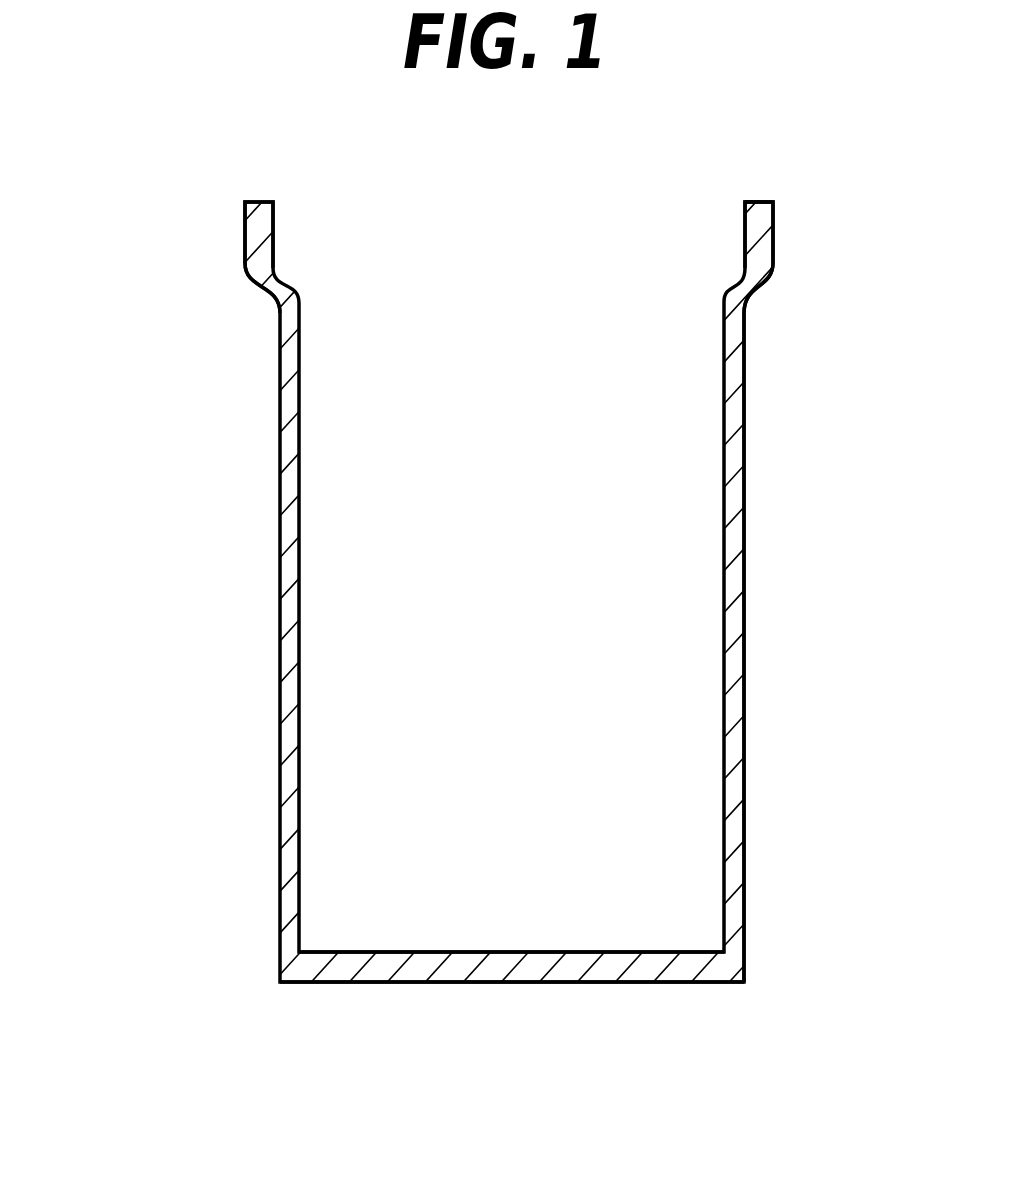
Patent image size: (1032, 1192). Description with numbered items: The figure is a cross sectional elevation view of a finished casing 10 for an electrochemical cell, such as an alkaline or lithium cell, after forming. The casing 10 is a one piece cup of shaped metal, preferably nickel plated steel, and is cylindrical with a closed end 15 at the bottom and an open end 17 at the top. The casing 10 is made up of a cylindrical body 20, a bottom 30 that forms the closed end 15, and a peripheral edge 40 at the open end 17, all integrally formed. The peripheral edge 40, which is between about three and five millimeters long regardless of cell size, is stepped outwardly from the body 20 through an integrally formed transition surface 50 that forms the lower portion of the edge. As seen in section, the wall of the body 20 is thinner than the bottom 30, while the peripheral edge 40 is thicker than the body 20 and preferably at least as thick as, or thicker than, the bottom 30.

The casing 10 is at (153, 583).
The closed end 15 is at (683, 1003).
The open end 17 is at (747, 200).
The body 20 is at (745, 675).
The bottom 30 is at (521, 982).
The peripheral edge 40 is at (245, 238).
The transition surface 50 is at (258, 300).